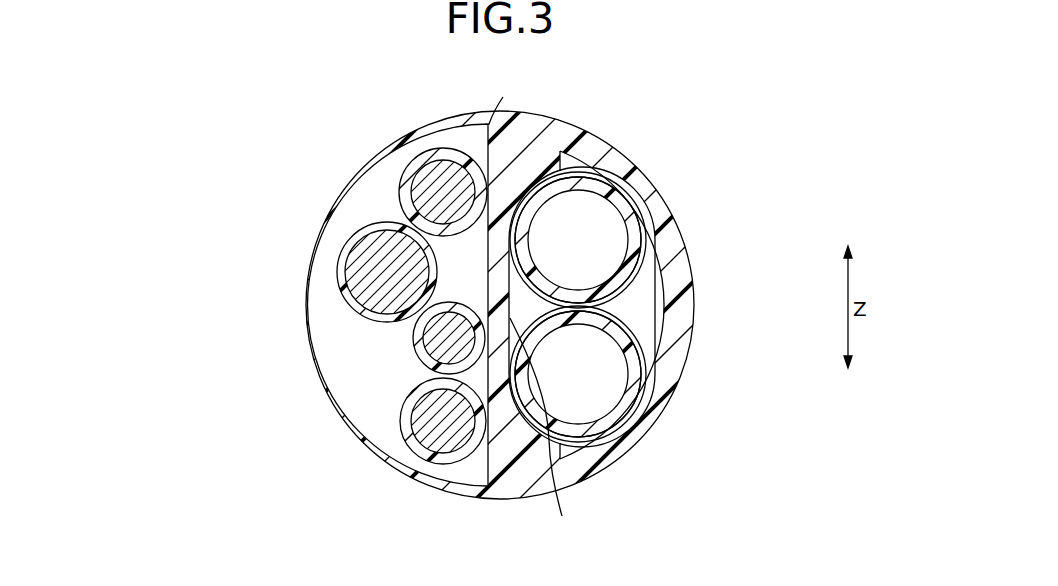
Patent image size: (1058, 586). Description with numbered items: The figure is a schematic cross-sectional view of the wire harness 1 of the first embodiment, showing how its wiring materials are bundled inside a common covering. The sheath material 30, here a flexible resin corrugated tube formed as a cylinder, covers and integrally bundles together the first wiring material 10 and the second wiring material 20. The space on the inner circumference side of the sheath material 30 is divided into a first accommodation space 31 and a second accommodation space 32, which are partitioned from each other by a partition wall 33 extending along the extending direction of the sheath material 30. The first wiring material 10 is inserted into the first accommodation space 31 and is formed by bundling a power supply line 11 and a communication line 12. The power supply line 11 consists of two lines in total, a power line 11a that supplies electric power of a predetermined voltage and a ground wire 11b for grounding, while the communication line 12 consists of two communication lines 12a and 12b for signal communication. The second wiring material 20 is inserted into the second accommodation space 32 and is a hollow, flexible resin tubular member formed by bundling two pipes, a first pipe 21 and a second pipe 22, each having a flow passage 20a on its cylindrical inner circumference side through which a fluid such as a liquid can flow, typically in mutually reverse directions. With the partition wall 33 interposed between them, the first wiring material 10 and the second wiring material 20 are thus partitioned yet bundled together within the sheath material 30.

The wire harness 1 is at (323, 129).
The first wiring material 10 is at (493, 310).
The power supply line 11 is at (493, 310).
The power line 11a is at (349, 318).
The ground wire 11b is at (391, 203).
The communication line 12 is at (493, 310).
The communication line 12a is at (406, 340).
The communication line 12b is at (398, 396).
The second wiring material 20 is at (493, 310).
The flow passage 20a is at (601, 230).
The first pipe 21 is at (640, 280).
The second pipe 22 is at (629, 326).
The sheath material 30 is at (569, 117).
The first accommodation space 31 is at (412, 279).
The second accommodation space 32 is at (656, 354).
The partition wall 33 is at (542, 431).